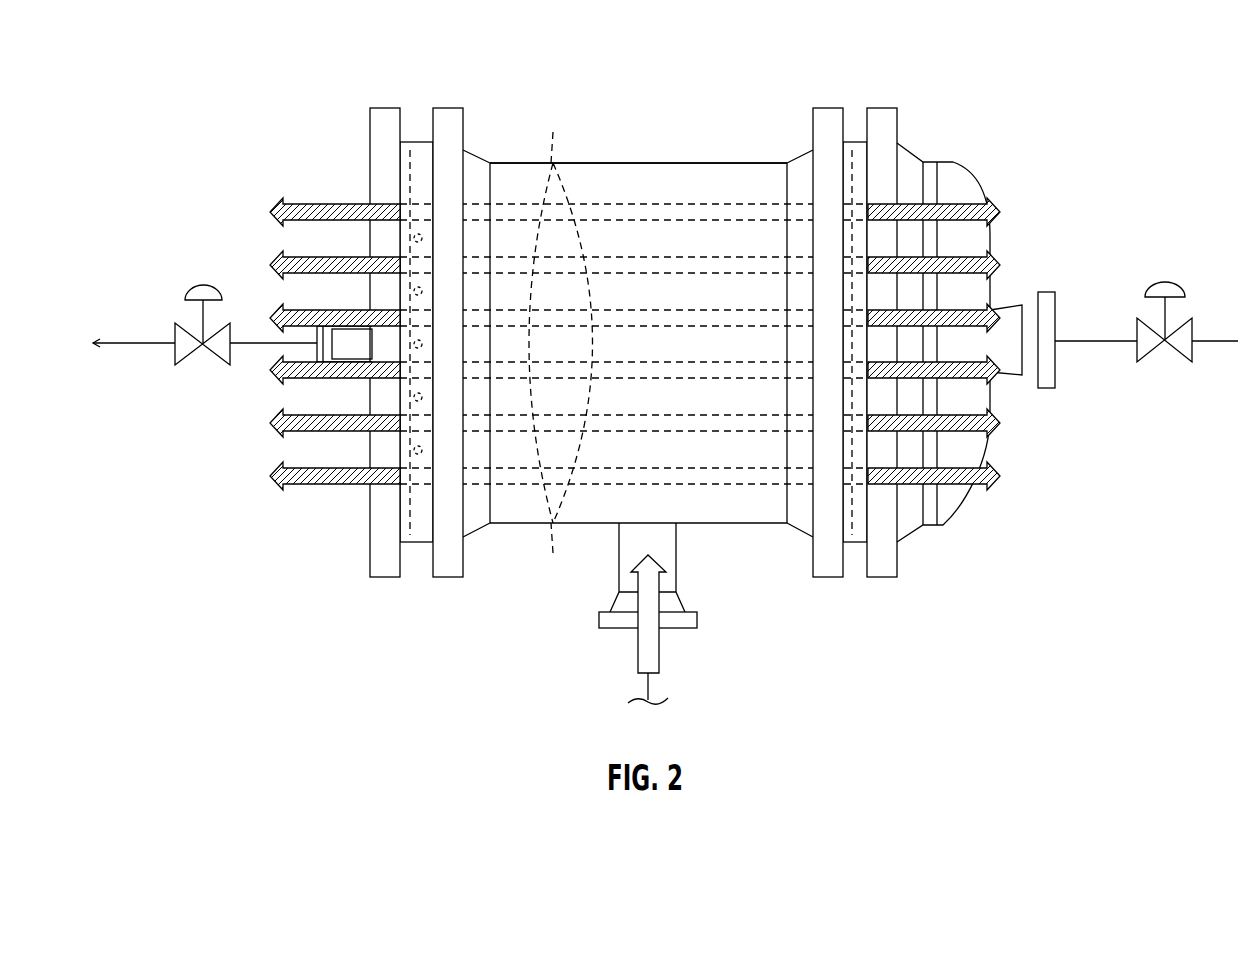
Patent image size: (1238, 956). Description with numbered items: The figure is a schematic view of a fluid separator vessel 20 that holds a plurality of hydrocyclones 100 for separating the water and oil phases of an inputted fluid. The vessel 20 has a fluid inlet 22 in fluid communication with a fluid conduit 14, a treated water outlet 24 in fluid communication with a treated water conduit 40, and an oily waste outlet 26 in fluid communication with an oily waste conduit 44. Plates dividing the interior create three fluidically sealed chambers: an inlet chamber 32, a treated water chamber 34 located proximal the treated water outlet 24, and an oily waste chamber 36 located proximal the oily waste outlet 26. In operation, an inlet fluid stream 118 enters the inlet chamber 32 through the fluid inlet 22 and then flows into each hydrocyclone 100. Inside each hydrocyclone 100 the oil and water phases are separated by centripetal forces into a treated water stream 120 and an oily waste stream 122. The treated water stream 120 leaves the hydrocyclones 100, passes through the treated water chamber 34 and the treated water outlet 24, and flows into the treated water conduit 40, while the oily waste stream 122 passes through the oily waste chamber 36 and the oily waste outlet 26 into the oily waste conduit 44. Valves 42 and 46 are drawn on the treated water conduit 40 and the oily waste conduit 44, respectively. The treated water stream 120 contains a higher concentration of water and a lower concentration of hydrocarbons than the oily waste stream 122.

The fluid conduit 14 is at (660, 700).
The fluid separator vessel 20 is at (742, 523).
The fluid inlet 22 is at (697, 620).
The treated water outlet 24 is at (1047, 292).
The oily waste outlet 26 is at (305, 315).
The inlet chamber 32 is at (685, 182).
The treated water chamber 34 is at (850, 142).
The oily waste chamber 36 is at (430, 142).
The treated water conduit 40 is at (1095, 340).
The control valve 42 is at (1165, 290).
The oily waste conduit 44 is at (133, 343).
The control valve 46 is at (207, 285).
The hydrocyclone 100 is at (633, 342).
The inlet fluid stream 118 is at (638, 650).
The treated water stream 120 is at (985, 312).
The oily waste stream 122 is at (367, 307).